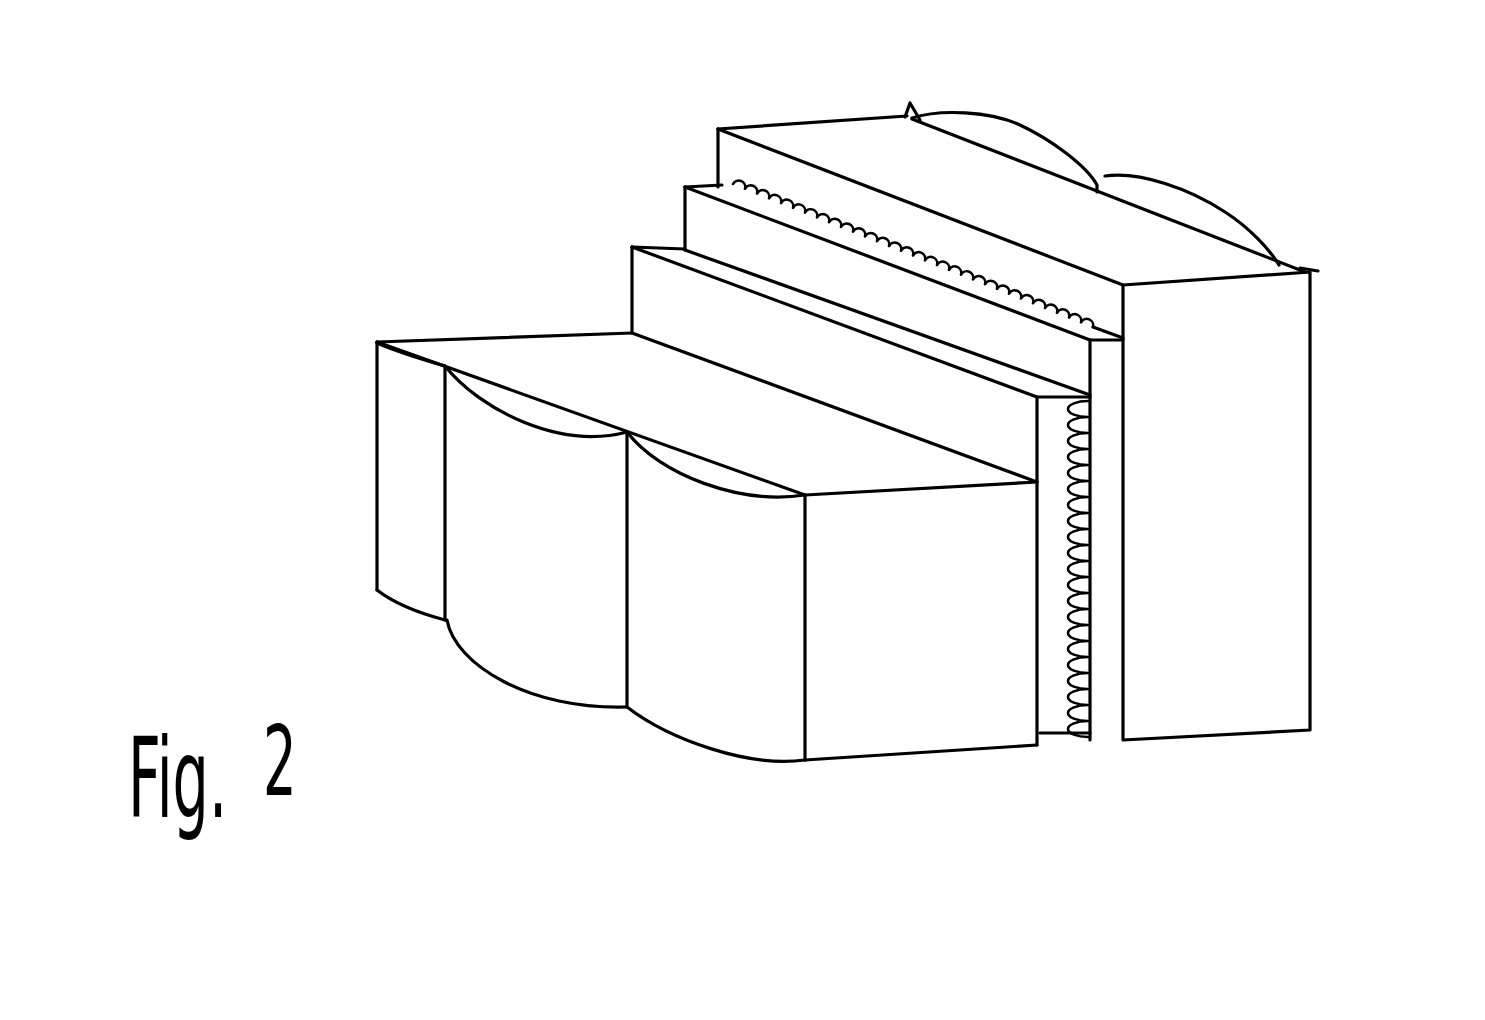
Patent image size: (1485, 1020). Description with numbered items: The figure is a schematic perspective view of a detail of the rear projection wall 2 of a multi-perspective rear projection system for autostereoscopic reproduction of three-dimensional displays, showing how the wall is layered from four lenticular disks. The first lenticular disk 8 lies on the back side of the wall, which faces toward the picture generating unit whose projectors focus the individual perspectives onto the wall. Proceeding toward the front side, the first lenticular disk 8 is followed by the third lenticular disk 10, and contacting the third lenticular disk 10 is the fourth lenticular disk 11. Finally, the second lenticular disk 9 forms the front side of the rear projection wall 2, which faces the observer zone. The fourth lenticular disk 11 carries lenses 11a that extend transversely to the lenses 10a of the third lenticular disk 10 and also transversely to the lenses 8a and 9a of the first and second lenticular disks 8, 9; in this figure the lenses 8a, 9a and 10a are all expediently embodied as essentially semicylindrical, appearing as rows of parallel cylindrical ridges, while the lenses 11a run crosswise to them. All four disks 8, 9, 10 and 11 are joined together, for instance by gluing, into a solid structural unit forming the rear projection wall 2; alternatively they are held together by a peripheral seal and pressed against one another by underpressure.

The rear projection wall 2 is at (819, 423).
The first lenticular disk 8 is at (1071, 382).
The lenses of the first lenticular disk 8a is at (987, 140).
The second lenticular disk 9 is at (601, 550).
The lenses of the second lenticular disk 9a is at (493, 395).
The third lenticular disk 10 is at (868, 208).
The lenses of the third lenticular disk 10a is at (827, 222).
The fourth lenticular disk 11 is at (1015, 488).
The lenses of the fourth lenticular disk 11a is at (1076, 547).